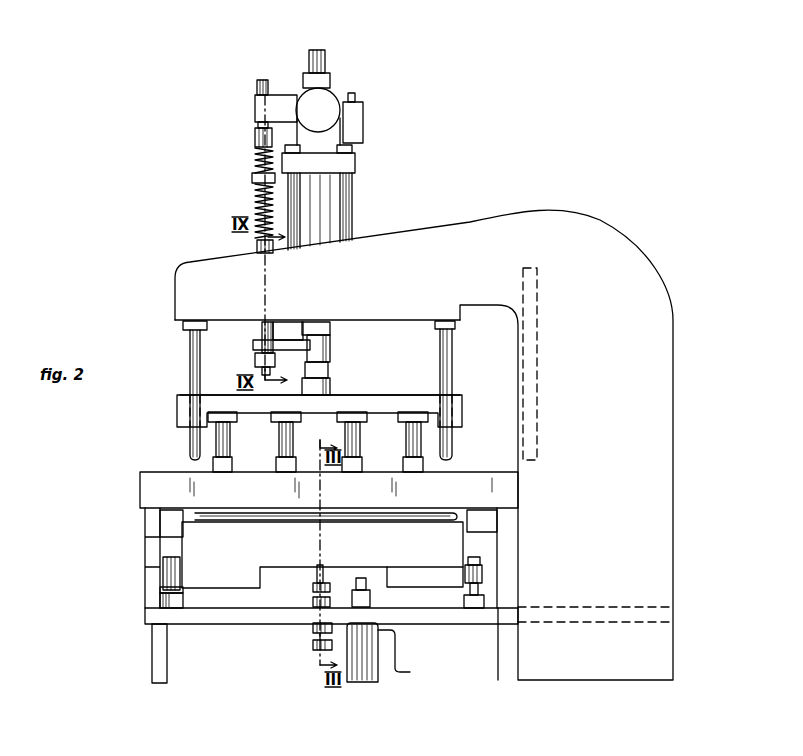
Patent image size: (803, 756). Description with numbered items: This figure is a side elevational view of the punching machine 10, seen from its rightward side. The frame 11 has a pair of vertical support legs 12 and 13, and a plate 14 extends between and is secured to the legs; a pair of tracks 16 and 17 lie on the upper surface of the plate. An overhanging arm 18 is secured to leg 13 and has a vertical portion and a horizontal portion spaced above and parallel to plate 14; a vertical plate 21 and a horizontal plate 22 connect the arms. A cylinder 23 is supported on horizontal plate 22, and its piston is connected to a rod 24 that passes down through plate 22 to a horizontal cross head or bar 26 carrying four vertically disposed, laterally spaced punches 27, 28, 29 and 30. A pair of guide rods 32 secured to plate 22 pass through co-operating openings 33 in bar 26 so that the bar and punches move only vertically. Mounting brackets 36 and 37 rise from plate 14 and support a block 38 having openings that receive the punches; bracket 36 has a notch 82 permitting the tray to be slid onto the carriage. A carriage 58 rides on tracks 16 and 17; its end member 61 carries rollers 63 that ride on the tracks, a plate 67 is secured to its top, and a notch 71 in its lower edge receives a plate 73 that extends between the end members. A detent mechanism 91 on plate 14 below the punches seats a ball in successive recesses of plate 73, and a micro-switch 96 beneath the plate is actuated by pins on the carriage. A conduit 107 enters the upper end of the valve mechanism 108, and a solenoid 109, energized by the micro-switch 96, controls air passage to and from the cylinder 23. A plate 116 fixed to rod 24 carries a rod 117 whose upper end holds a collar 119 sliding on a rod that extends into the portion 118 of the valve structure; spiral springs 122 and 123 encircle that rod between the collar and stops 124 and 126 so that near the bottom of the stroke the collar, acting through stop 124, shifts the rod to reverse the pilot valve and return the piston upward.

The machine 10 is at (440, 177).
The frame 11 is at (262, 665).
The vertical support leg 12 is at (155, 668).
The vertical support leg 13 is at (508, 678).
The plate 14 is at (232, 618).
The track 16 is at (180, 603).
The track 17 is at (466, 602).
The overhanging arm 18 is at (642, 280).
The vertical plate 21 is at (532, 430).
The horizontal plate 22 is at (238, 318).
The cylinder 23 is at (362, 198).
The rod 24 is at (326, 380).
The horizontal cross head or bar 26 is at (402, 393).
The punch 27 is at (230, 447).
The punch 28 is at (282, 445).
The punch 29 is at (350, 436).
The punch 30 is at (412, 437).
The guide rod 32 is at (195, 352).
The opening 33 is at (177, 410).
The mounting bracket 36 is at (155, 578).
The mounting bracket 37 is at (507, 552).
The block 38 is at (145, 490).
The carriage 58 is at (407, 598).
The end member 61 is at (246, 577).
The roller 63 is at (166, 592).
The plate 67 is at (270, 522).
The notch 71 is at (390, 565).
The plate 73 is at (311, 578).
The notch 82 is at (152, 553).
The detent mechanism 91 is at (312, 652).
The micro-switch 96 is at (372, 682).
The conduit 107 is at (318, 55).
The valve mechanism 108 is at (340, 91).
The solenoid 109 is at (356, 127).
The plate 116 is at (281, 336).
The rod 117 is at (262, 338).
The portion of the valve structure 118 is at (267, 100).
The collar 119 is at (252, 178).
The spiral spring 122 is at (257, 208).
The spiral spring 123 is at (257, 156).
The stop 124 is at (258, 248).
The stop 126 is at (257, 136).